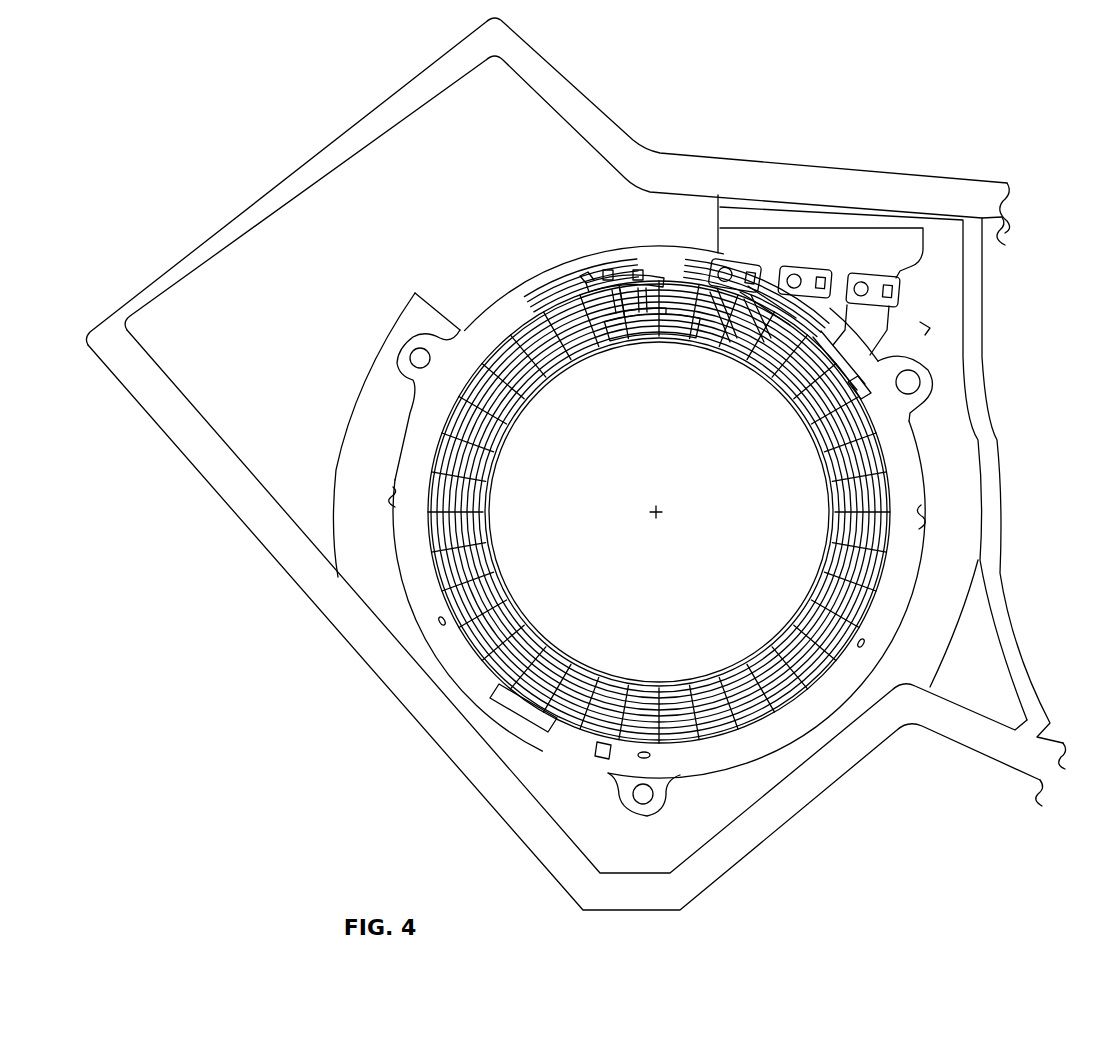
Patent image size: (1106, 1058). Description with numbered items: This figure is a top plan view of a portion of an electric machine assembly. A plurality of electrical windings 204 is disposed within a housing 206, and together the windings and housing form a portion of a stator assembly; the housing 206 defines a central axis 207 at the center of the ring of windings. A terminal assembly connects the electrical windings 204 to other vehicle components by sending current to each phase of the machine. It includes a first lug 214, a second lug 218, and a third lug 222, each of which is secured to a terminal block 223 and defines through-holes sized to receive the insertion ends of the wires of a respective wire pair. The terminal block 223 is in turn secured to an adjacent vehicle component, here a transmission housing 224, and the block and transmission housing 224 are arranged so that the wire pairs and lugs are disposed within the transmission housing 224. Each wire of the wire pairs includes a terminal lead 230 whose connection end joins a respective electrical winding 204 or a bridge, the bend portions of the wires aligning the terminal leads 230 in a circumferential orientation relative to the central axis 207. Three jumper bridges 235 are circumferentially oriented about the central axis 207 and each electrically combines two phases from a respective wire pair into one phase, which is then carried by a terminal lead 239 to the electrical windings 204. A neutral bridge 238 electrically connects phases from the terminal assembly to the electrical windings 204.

The electrical windings 204 is at (895, 538).
The housing 206 is at (398, 432).
The central axis 207 is at (662, 514).
The first lug 214 is at (808, 256).
The second lug 218 is at (868, 259).
The third lug 222 is at (893, 266).
The terminal block 223 is at (749, 250).
The transmission housing 224 is at (310, 132).
The terminal lead 230 is at (618, 346).
The jumper bridge 235 is at (576, 270).
The neutral bridge 238 is at (530, 380).
The terminal lead 239 is at (596, 262).